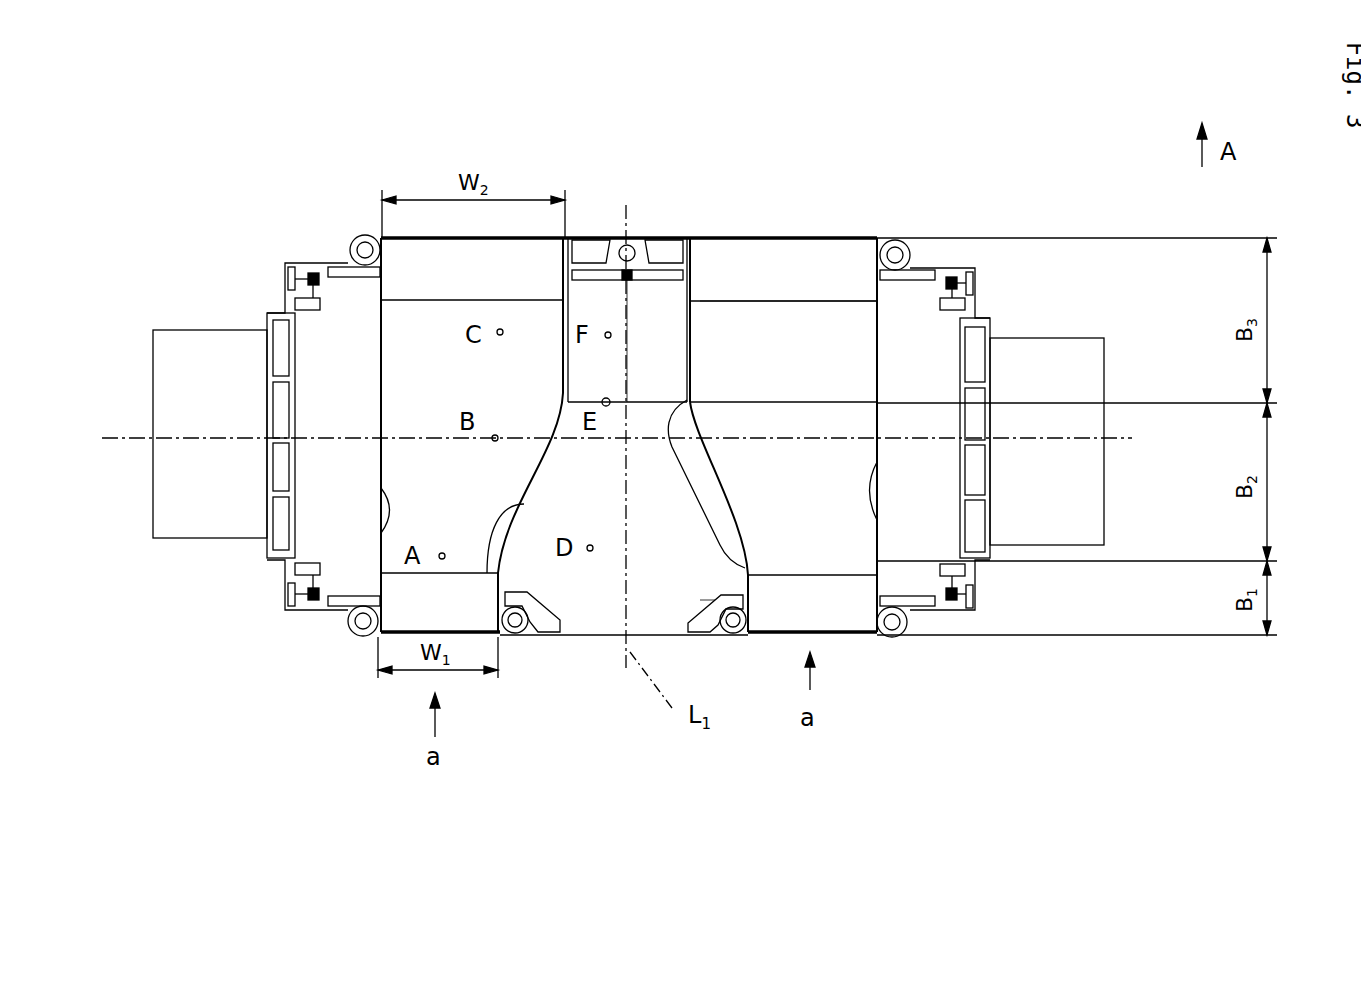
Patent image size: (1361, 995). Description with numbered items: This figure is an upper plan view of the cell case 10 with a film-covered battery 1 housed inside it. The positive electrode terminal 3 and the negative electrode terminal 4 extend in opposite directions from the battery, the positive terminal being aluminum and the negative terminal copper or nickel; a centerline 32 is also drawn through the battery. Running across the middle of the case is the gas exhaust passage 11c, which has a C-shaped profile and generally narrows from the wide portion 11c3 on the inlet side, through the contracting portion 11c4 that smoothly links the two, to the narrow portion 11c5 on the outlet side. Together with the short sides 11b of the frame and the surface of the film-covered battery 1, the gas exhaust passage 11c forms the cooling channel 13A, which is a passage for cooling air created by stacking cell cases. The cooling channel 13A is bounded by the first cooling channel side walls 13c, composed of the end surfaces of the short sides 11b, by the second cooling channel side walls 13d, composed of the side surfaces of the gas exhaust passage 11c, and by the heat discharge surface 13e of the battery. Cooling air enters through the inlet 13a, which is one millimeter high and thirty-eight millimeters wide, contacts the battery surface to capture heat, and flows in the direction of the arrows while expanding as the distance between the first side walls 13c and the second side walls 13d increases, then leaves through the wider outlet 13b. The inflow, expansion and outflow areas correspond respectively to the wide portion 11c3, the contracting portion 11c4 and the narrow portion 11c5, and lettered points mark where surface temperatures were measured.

The film-covered battery 1 is at (412, 338).
The positive electrode terminal 3 is at (197, 518).
The center axis line 32 is at (128, 440).
The negative electrode terminal 4 is at (1095, 505).
The cell case 10 is at (953, 265).
The short sides 11b is at (940, 342).
The gas exhaust passage 11c is at (650, 297).
The wide portion 11c3 is at (685, 595).
The contracting portion 11c4 is at (690, 497).
The narrow portion 11c5 is at (650, 341).
The cooling channel 13A is at (777, 320).
The inlet 13a is at (395, 607).
The outlet 13b is at (405, 262).
The first cooling channel side walls 13c is at (392, 490).
The second cooling channel side walls 13d is at (505, 630).
The heat discharge surface 13e is at (827, 330).